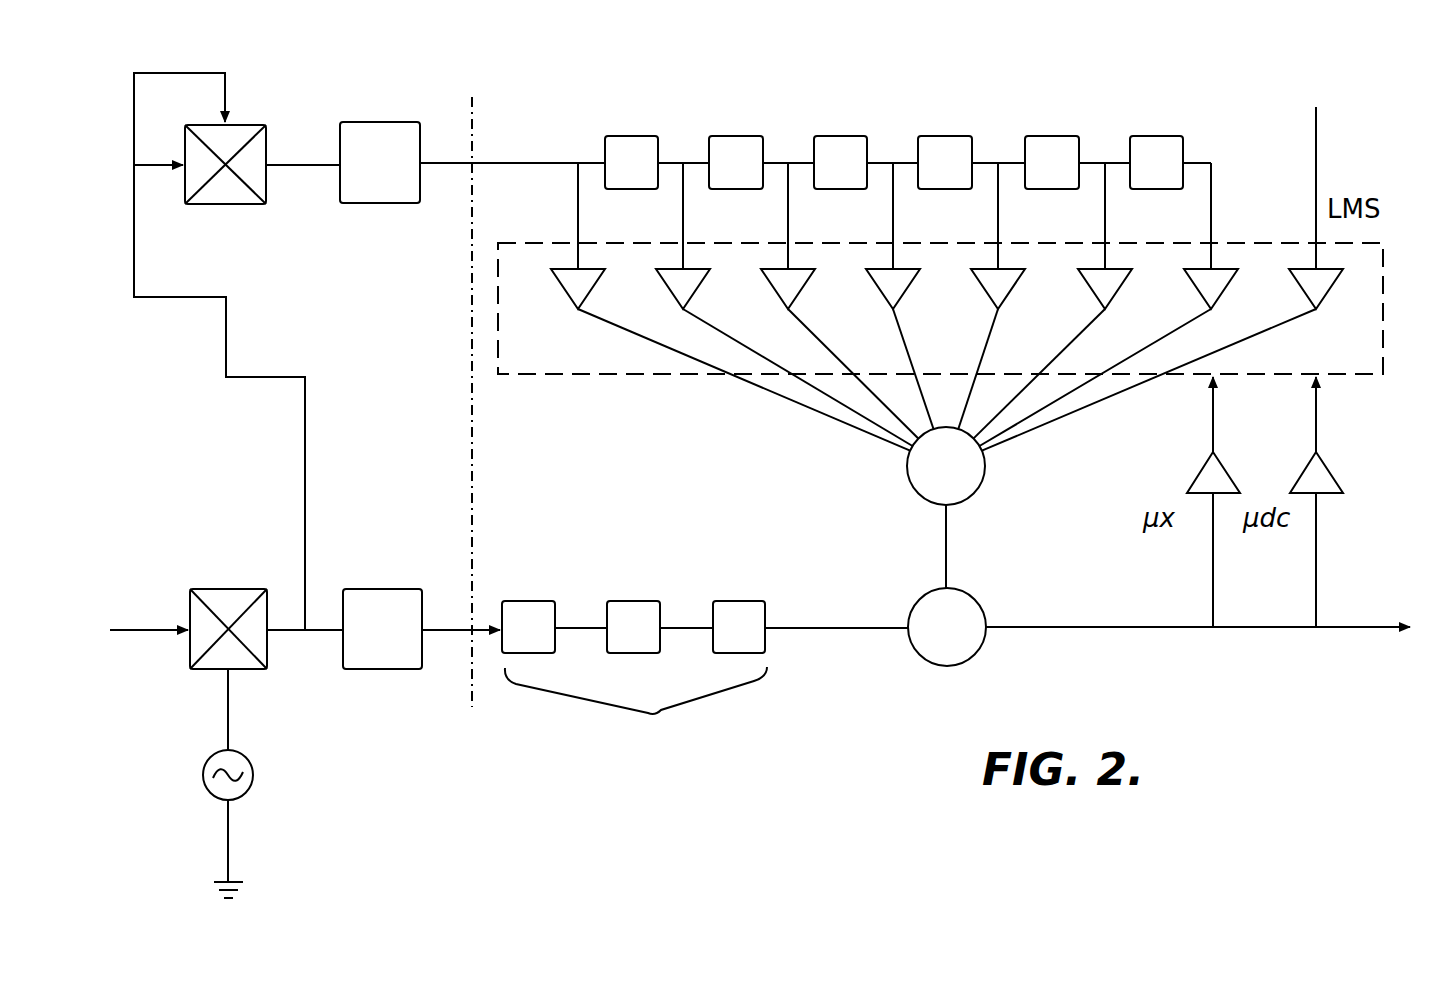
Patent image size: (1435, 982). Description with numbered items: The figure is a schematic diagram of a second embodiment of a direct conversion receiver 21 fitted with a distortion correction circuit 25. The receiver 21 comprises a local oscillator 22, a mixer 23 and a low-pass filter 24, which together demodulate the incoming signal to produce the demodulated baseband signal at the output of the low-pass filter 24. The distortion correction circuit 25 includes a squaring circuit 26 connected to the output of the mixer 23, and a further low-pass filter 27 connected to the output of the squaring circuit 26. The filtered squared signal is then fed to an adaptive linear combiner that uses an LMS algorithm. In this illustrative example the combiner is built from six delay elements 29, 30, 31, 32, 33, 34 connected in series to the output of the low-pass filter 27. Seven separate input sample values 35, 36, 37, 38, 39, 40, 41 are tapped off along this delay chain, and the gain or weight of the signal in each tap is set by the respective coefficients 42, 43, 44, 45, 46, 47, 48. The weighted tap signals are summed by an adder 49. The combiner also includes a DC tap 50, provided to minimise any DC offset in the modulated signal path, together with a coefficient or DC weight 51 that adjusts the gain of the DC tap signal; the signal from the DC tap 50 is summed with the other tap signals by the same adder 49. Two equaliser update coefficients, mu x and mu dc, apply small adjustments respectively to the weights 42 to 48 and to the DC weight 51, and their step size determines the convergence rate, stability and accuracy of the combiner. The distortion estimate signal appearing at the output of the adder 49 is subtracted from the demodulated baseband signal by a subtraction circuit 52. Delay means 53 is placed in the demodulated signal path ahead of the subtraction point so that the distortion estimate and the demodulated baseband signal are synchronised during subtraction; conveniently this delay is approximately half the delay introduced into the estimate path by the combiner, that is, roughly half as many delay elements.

The direct conversion receiver 21 is at (240, 462).
The local oscillator 22 is at (245, 757).
The mixer 23 is at (231, 602).
The low-pass filter 24 is at (382, 598).
The distortion correction circuit 25 is at (270, 86).
The squaring circuit 26 is at (247, 205).
The low-pass filter 27 is at (360, 204).
The delay element 29 is at (631, 162).
The delay element 30 is at (710, 162).
The delay element 31 is at (815, 162).
The delay element 32 is at (919, 162).
The delay element 33 is at (1025, 162).
The delay element 34 is at (1145, 162).
The input sample value 35 is at (578, 160).
The input sample value 36 is at (683, 160).
The input sample value 37 is at (788, 160).
The input sample value 38 is at (893, 160).
The input sample value 39 is at (998, 160).
The input sample value 40 is at (1105, 160).
The input sample value 41 is at (1211, 160).
The coefficient 42 is at (566, 298).
The coefficient 43 is at (672, 295).
The coefficient 44 is at (778, 297).
The coefficient 45 is at (885, 298).
The coefficient 46 is at (991, 297).
The coefficient 47 is at (1096, 290).
The coefficient 48 is at (1196, 290).
The adder 49 is at (930, 507).
The DC tap 50 is at (1314, 133).
The DC weight 51 is at (1330, 290).
The subtraction circuit 52 is at (972, 590).
The delay means 53 is at (705, 676).